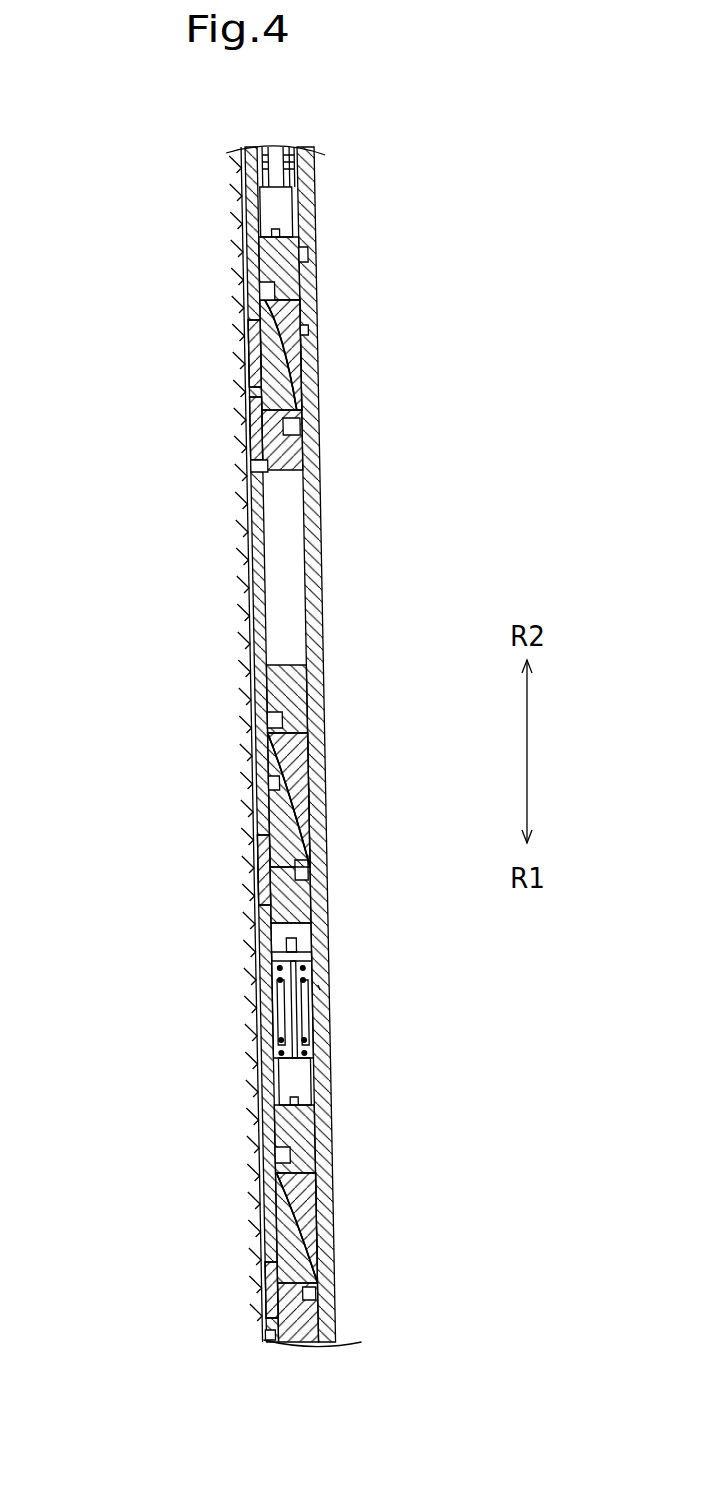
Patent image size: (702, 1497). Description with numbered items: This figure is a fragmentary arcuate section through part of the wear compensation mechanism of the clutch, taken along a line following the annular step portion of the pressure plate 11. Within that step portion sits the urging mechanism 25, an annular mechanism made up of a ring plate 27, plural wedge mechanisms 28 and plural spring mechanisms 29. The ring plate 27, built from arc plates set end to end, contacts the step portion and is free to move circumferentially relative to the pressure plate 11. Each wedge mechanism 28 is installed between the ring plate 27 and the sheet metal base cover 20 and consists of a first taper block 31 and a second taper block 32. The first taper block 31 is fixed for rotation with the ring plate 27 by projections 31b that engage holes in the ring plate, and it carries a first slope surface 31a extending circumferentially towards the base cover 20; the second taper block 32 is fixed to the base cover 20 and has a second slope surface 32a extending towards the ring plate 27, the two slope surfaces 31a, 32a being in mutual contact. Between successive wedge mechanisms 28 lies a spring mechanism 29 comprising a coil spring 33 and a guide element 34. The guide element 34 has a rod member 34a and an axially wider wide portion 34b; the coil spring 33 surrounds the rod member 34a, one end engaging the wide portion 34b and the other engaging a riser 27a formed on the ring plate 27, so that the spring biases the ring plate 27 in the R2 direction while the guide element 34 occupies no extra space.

The pressure plate 11 is at (246, 575).
The base cover 20 is at (315, 535).
The urging mechanism 25 is at (362, 626).
The ring plate 27 is at (245, 219).
The riser 27a is at (300, 942).
The wedge mechanism 28 is at (308, 360).
The spring mechanism 29 is at (318, 988).
The first taper block 31 is at (248, 388).
The first slope surface 31a is at (300, 378).
The projection 31b is at (248, 468).
The second taper block 32 is at (300, 295).
The second slope surface 32a is at (307, 253).
The coil spring 33 is at (310, 1012).
The guide element 34 is at (279, 1080).
The rod member 34a is at (300, 918).
The wide portion 34b is at (284, 198).